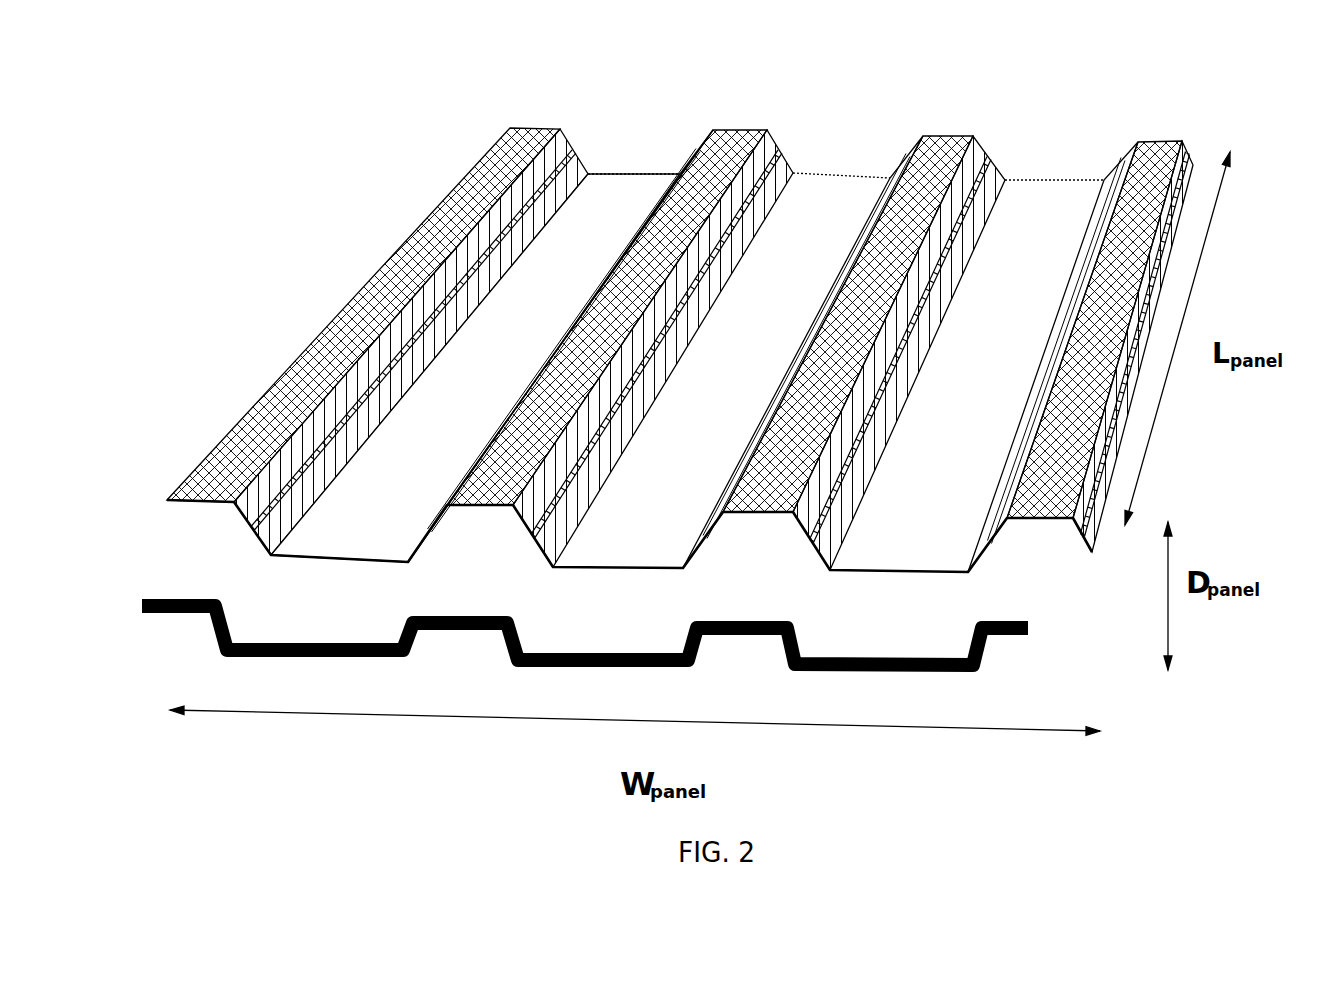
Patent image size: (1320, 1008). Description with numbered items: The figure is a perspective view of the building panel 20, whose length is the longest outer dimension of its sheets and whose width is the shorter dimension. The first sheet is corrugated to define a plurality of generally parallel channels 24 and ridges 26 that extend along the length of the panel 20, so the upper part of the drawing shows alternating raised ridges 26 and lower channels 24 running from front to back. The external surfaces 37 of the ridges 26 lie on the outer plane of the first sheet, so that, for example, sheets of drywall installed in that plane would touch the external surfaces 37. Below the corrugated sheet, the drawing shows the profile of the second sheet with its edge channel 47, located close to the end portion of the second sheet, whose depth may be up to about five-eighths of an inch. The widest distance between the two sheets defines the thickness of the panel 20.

The building panel 20 is at (680, 315).
The channels 24 is at (432, 408).
The ridges 26 is at (729, 146).
The external surfaces of the ridges 37 is at (249, 410).
The second sheet edge channel 47 is at (175, 589).